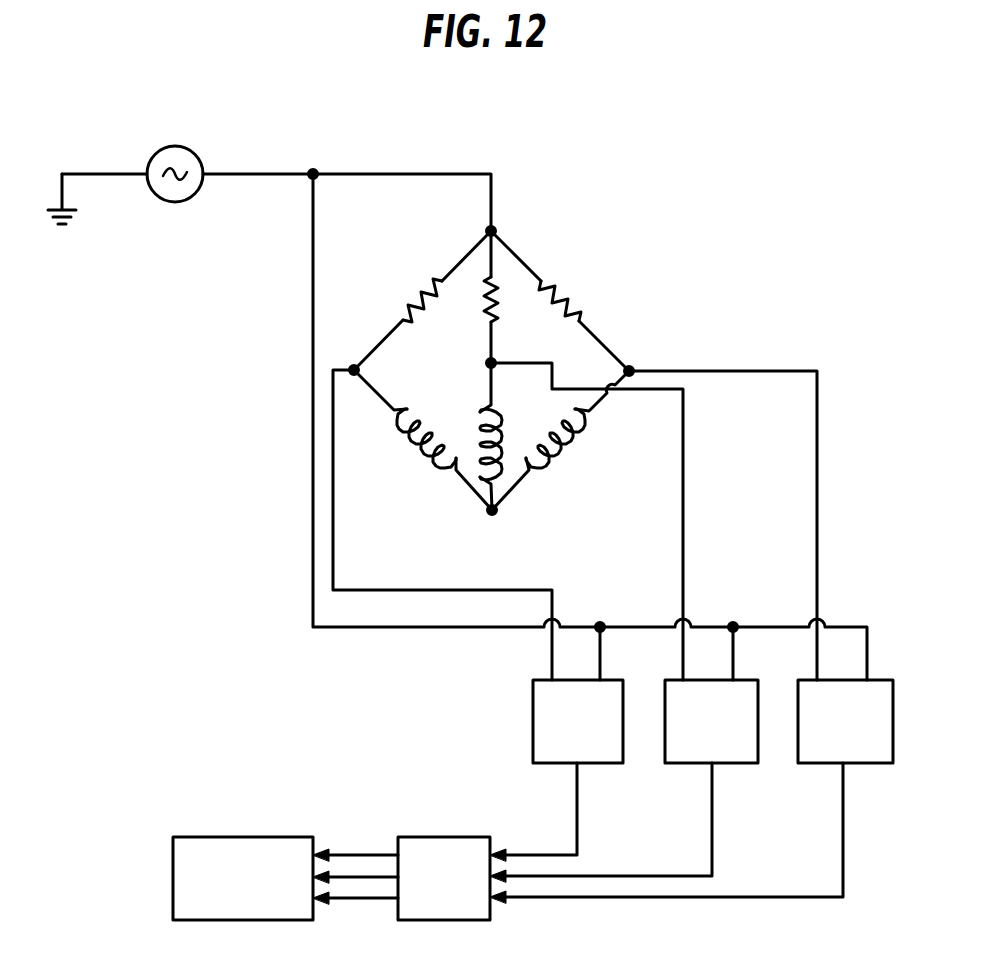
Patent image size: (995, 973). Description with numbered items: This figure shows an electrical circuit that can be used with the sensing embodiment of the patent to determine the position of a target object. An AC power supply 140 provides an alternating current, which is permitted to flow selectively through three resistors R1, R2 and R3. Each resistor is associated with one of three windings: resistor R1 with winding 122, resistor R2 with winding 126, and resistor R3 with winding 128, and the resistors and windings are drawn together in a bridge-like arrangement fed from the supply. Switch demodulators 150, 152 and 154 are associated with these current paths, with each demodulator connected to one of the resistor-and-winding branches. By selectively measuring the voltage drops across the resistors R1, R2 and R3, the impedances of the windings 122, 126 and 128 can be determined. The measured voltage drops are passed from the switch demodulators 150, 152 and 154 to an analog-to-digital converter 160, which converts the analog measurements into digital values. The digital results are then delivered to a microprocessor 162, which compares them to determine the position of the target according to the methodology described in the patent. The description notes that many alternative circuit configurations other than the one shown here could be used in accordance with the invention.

The AC power supply 140 is at (172, 148).
The resistor R1 is at (426, 286).
The resistor R2 is at (500, 300).
The resistor R3 is at (557, 286).
The winding 122 is at (415, 440).
The winding 126 is at (480, 427).
The winding 128 is at (560, 440).
The switch demodulator 150 is at (578, 721).
The switch demodulator 152 is at (711, 721).
The switch demodulator 154 is at (845, 721).
The analog-to-digital converter 160 is at (472, 837).
The microprocessor 162 is at (244, 837).